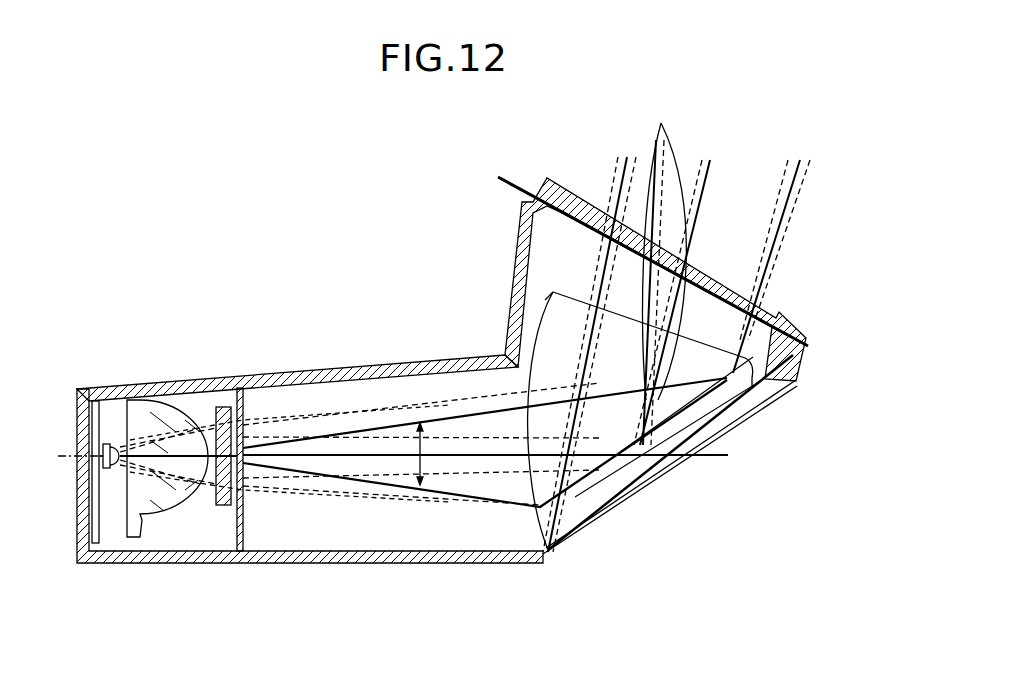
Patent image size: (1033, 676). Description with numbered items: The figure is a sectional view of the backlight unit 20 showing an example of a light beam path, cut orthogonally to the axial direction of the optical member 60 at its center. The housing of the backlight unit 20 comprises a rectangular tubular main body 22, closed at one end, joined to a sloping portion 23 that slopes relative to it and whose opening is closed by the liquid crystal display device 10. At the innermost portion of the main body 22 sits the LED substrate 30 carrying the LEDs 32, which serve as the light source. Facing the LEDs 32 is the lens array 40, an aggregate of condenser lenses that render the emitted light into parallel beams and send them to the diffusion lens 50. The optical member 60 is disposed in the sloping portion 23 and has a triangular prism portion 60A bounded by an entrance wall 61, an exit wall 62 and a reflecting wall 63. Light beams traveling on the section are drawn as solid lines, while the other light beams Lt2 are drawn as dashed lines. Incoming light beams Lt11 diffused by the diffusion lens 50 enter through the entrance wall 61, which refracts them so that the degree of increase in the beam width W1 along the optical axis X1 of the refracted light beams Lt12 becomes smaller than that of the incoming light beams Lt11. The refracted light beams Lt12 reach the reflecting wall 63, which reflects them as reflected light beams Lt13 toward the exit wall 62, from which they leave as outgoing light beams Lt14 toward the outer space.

The liquid crystal display device 10 is at (530, 168).
The backlight unit 20 is at (441, 370).
The main body 22 is at (281, 363).
The sloping portion 23 is at (508, 246).
The LED substrate 30 is at (97, 387).
The LEDs 32 is at (116, 400).
The lens array 40 is at (148, 388).
The diffusion lens 50 is at (217, 392).
The optical member 60 is at (615, 360).
The prism portion 60A is at (541, 297).
The entrance wall 61 is at (533, 320).
The exit wall 62 is at (582, 283).
The reflecting wall 63 is at (588, 503).
The beam width W1 is at (422, 458).
The optical axis X1 is at (68, 457).
The incoming light beams Lt11 is at (302, 440).
The light beams Lt2 is at (335, 483).
The refracted light beams Lt12 is at (548, 553).
The reflected light beams Lt13 is at (737, 375).
The outgoing light beams Lt14 is at (664, 274).